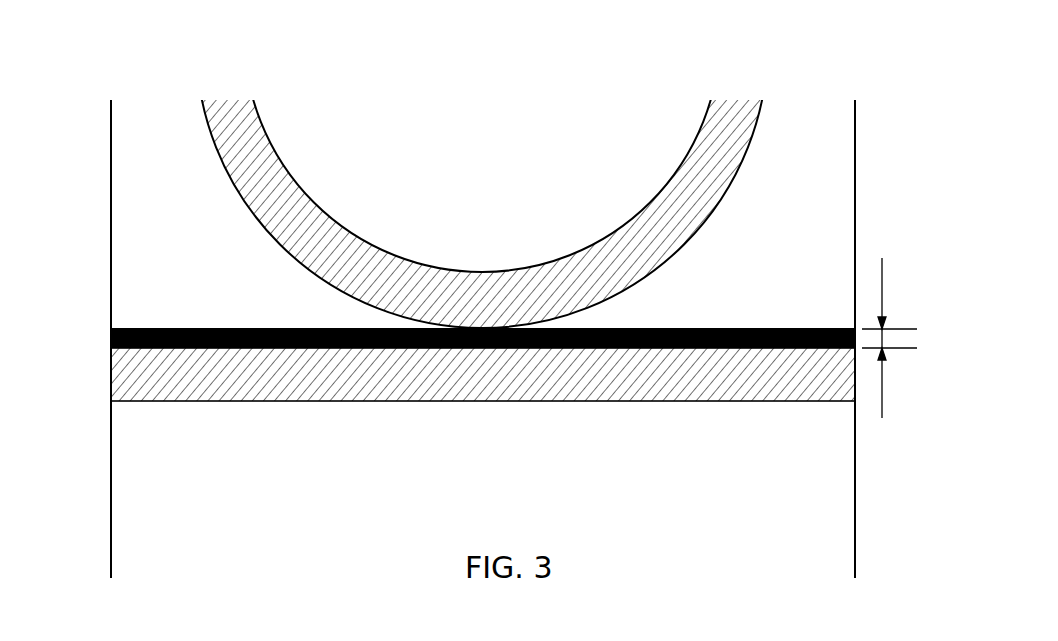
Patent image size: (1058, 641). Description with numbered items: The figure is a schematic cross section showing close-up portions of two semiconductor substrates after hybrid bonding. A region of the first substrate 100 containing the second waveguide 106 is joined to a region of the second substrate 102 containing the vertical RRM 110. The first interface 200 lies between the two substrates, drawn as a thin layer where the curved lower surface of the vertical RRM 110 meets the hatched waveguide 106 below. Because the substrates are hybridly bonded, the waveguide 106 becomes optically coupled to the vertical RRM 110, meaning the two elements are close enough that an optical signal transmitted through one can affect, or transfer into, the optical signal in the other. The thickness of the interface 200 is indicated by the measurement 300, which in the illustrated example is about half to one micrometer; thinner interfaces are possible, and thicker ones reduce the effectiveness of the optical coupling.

The first substrate 100 is at (110, 470).
The second substrate 102 is at (110, 205).
The second waveguide 106 is at (660, 383).
The vertical RRM 110 is at (738, 110).
The first interface 200 is at (720, 328).
The measurement 300 is at (912, 338).